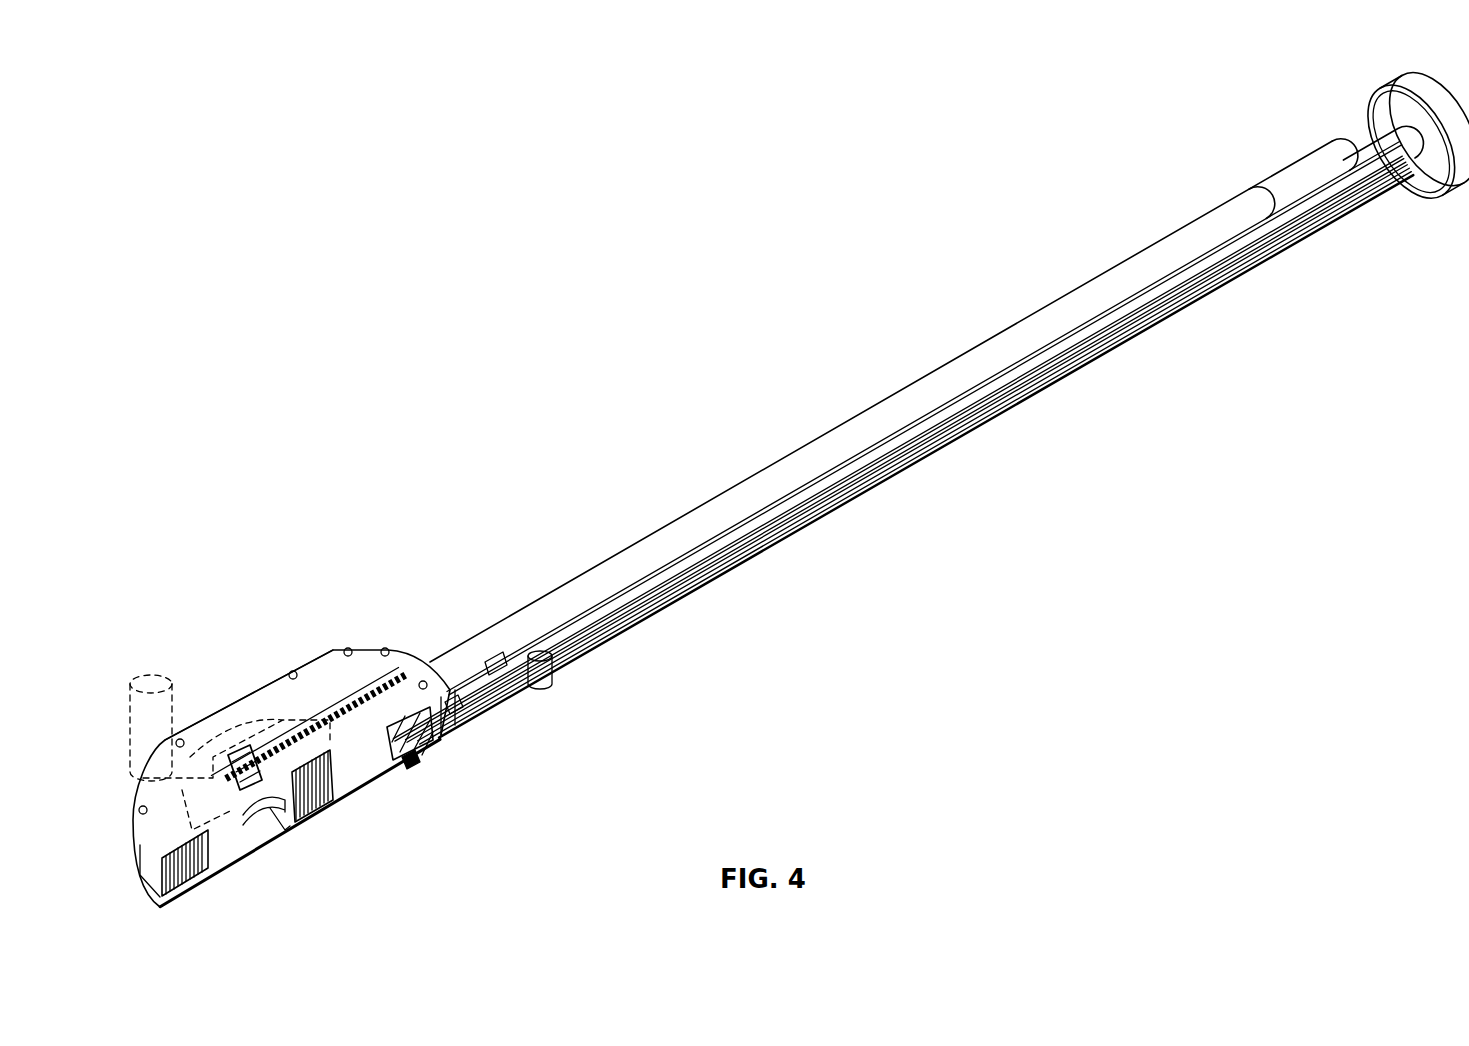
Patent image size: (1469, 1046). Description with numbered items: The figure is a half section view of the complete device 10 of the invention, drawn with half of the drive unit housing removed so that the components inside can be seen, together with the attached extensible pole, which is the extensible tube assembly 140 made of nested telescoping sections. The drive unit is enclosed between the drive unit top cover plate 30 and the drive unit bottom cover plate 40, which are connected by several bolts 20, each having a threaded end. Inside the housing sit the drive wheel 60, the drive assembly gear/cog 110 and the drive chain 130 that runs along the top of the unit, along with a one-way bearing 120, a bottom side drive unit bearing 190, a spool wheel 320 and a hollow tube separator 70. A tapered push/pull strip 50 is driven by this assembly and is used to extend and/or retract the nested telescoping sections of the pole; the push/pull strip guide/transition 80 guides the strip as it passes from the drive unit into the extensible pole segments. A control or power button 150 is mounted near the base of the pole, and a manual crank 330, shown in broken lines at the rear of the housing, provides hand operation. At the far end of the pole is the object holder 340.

The device 10 is at (283, 545).
The bolt 20 is at (138, 810).
The drive unit top cover plate 30 is at (263, 703).
The drive unit bottom cover plate 40 is at (362, 775).
The tapered push/pull strip 50 is at (320, 807).
The drive wheel 60 is at (448, 737).
The hollow tube separator 70 is at (200, 893).
The push/pull strip guide/transition 80 is at (468, 707).
The drive assembly gear/cog 110 is at (430, 660).
The one-way bearing 120 is at (235, 750).
The drive chain 130 is at (338, 690).
The extensible tube assembly 140 is at (1370, 100).
The control or power button 150 is at (543, 684).
The bottom side drive unit bearing 190 is at (415, 767).
The spool wheel 320 is at (243, 833).
The manual crank 330 is at (147, 672).
The object holder 340 is at (1423, 197).